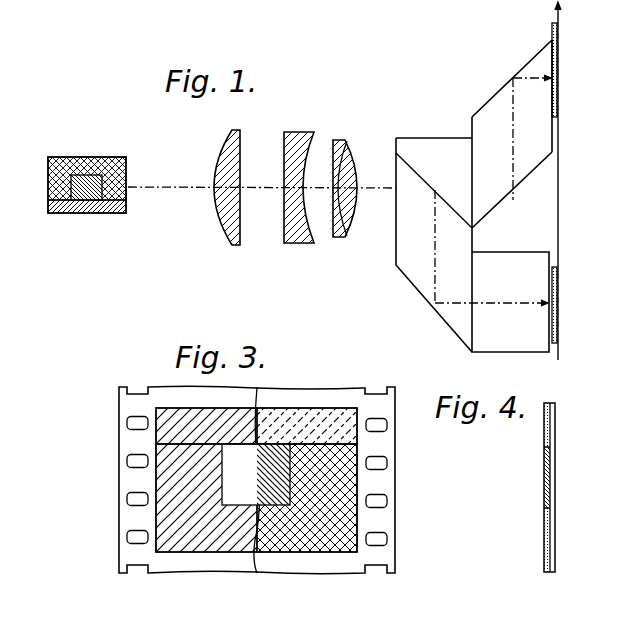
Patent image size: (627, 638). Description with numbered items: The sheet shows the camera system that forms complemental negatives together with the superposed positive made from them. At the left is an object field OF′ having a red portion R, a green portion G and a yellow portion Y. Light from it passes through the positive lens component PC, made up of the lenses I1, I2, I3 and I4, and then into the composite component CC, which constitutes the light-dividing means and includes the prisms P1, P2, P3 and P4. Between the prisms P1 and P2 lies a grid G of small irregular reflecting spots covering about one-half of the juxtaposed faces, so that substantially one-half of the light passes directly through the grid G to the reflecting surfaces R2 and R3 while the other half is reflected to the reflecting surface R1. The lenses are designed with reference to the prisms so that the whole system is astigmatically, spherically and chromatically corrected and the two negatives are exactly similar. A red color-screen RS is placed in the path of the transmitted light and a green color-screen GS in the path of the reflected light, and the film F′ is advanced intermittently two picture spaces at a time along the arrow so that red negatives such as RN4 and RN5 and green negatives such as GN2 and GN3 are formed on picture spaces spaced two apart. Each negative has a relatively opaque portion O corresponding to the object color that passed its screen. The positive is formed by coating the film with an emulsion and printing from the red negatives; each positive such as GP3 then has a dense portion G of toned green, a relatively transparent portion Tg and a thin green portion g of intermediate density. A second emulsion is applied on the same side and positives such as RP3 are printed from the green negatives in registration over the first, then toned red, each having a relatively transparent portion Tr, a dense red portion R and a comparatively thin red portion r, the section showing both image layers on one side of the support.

In FIG. 1, the red portion R is at (50, 157).
In FIG. 3, the red portion R is at (275, 485).
In FIG. 4, the red portion R is at (545, 479).
In FIG. 1, the object field OF′ is at (86, 165).
In FIG. 1, the yellow portion Y is at (126, 168).
In FIG. 1, the grid G is at (98, 213).
In FIG. 3, the grid G is at (175, 421).
In FIG. 4, the grid G is at (555, 432).
In FIG. 1, the positive lens component PC is at (275, 200).
In FIG. 1, the lens I1 is at (218, 222).
In FIG. 1, the lens I2 is at (300, 243).
In FIG. 1, the lens I3 is at (340, 238).
In FIG. 1, the lens I4 is at (350, 236).
In FIG. 1, the composite component CC is at (479, 190).
In FIG. 1, the prism P1 is at (434, 271).
In FIG. 1, the prism P2 is at (434, 164).
In FIG. 1, the prism P3 is at (512, 134).
In FIG. 1, the prism P4 is at (510, 290).
In FIG. 1, the reflecting surface R1 is at (460, 312).
In FIG. 1, the reflecting surface R2 is at (494, 198).
In FIG. 1, the reflecting surface R3 is at (507, 83).
In FIG. 1, the red color-screen RS is at (550, 40).
In FIG. 4, the red color-screen RS is at (531, 635).
In FIG. 1, the red negative RN5 is at (560, 75).
In FIG. 1, the red negative RN4 is at (558, 218).
In FIG. 1, the green negative GN2 is at (558, 152).
In FIG. 1, the green negative GN3 is at (558, 302).
In FIG. 1, the green color-screen GS is at (552, 345).
In FIG. 1, the film F′ is at (558, 360).
In FIG. 4, the film F′ is at (555, 572).
In FIG. 1, the opaque portion O is at (613, 106).
In FIG. 3, the relatively transparent portion Tg is at (232, 478).
In FIG. 4, the relatively transparent portion Tg is at (555, 484).
In FIG. 3, the relatively transparent portion Tr is at (342, 437).
In FIG. 4, the relatively transparent portion Tr is at (545, 438).
In FIG. 3, the thin green portion g is at (168, 518).
In FIG. 4, the thin green portion g is at (555, 532).
In FIG. 3, the thin red portion r is at (338, 520).
In FIG. 4, the thin red portion r is at (545, 531).
In FIG. 3, the positive GP3 is at (201, 552).
In FIG. 4, the positive GP3 is at (550, 572).
In FIG. 3, the positive RP3 is at (317, 552).
In FIG. 4, the positive RP3 is at (544, 568).